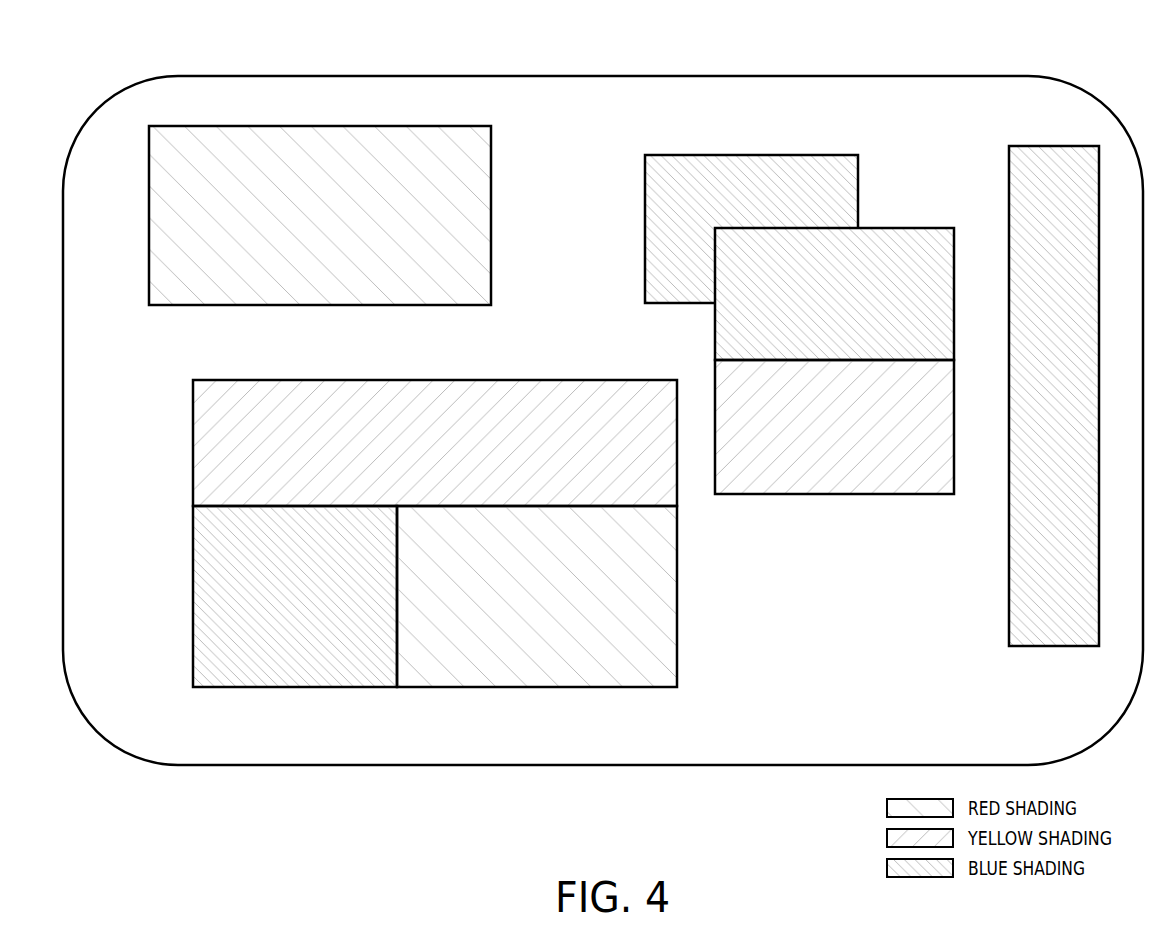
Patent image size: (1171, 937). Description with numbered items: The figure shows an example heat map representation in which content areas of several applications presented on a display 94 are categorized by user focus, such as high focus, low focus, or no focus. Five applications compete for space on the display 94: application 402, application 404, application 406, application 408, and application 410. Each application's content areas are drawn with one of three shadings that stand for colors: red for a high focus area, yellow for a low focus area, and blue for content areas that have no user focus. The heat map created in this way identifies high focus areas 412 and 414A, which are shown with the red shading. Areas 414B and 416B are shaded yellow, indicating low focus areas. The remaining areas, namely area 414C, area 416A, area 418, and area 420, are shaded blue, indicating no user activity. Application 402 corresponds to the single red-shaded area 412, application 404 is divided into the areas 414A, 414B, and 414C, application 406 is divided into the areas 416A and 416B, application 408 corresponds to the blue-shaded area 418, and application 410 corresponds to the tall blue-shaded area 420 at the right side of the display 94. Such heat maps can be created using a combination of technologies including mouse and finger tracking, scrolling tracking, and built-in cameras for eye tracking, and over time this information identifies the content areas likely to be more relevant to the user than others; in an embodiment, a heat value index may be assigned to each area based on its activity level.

The display 94 is at (758, 77).
The application 402 is at (304, 247).
The application 404 is at (392, 533).
The application 406 is at (834, 393).
The application 408 is at (708, 229).
The application 410 is at (1016, 400).
The high focus area 412 is at (299, 230).
The high focus area 414A is at (506, 612).
The low focus area 414B is at (406, 456).
The content area 414C is at (266, 612).
The content area 416A is at (803, 442).
The low focus area 416B is at (803, 308).
The content area 418 is at (713, 204).
The content area 420 is at (1029, 410).